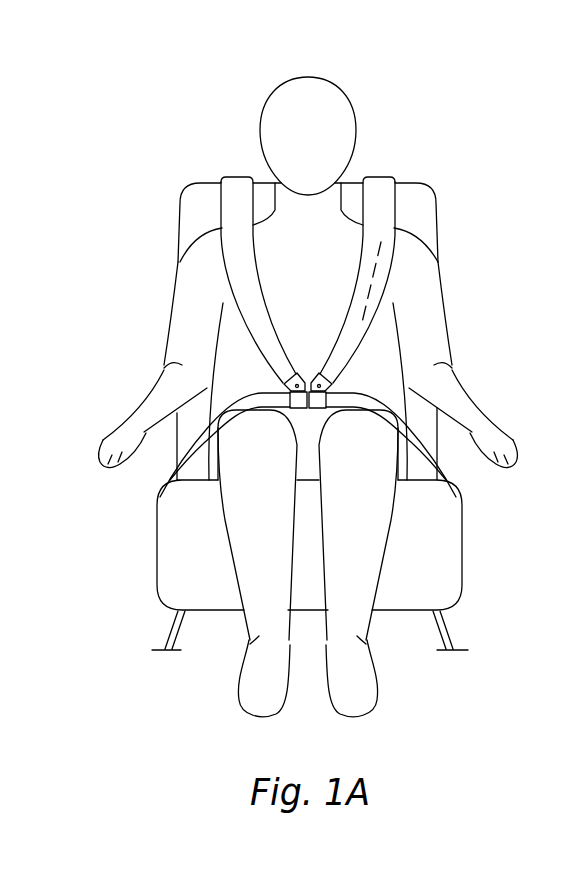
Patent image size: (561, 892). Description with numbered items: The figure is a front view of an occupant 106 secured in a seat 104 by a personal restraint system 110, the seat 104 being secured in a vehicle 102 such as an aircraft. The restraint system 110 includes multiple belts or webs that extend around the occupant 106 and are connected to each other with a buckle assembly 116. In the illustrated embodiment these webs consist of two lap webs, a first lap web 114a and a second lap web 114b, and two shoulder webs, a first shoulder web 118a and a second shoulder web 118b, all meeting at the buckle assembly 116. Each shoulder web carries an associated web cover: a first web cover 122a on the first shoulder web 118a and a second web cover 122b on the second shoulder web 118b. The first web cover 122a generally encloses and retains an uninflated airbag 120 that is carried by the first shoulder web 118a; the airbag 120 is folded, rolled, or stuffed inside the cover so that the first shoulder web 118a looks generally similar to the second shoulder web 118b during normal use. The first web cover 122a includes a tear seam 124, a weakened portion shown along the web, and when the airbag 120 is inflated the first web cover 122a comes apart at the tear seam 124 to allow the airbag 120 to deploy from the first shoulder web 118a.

The vehicle 102 is at (485, 708).
The seat 104 is at (450, 583).
The occupant 106 is at (380, 540).
The personal restraint system 110 is at (171, 127).
The first lap web 114a is at (447, 472).
The second lap web 114b is at (170, 470).
The buckle assembly 116 is at (302, 412).
The first shoulder web 118a is at (350, 357).
The second shoulder web 118b is at (263, 350).
The airbag 120 is at (416, 215).
The first web cover 122a is at (416, 280).
The second web cover 122b is at (230, 312).
The tear seam 124 is at (381, 259).